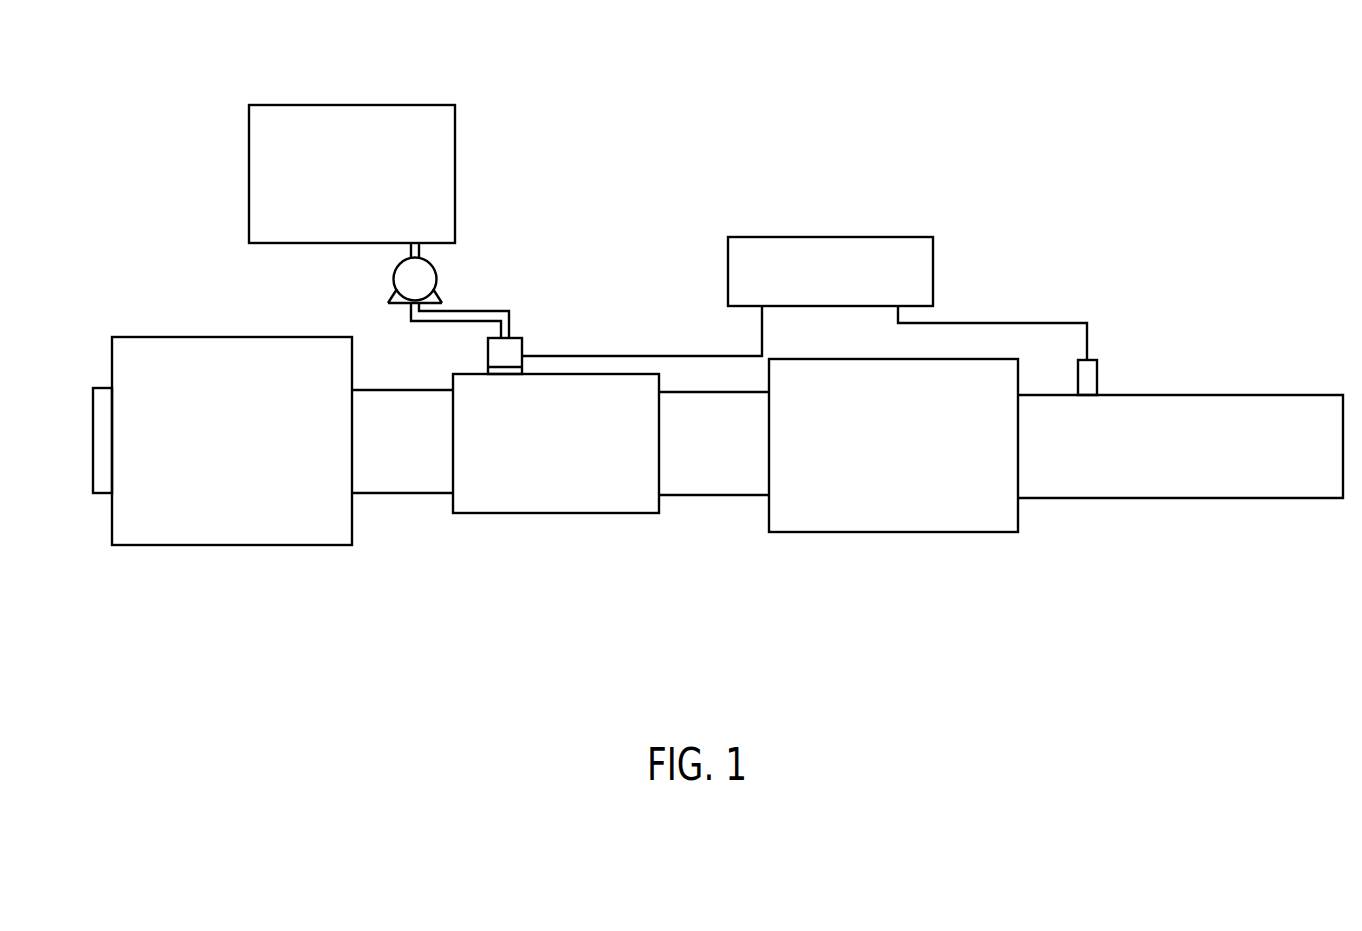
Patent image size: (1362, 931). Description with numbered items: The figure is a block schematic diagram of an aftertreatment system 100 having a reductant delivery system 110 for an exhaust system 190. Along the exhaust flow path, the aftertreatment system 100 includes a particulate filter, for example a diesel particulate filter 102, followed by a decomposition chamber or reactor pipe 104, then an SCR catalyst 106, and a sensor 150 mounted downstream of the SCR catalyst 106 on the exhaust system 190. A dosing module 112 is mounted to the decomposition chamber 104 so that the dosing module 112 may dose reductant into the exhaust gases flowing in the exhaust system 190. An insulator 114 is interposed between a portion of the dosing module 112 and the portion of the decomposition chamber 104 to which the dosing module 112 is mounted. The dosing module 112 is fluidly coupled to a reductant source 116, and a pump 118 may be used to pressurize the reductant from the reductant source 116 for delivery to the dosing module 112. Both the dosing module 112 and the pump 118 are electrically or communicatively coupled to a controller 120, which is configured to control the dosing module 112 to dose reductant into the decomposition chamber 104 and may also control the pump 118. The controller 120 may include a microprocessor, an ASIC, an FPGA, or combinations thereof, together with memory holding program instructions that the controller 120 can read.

The aftertreatment system 100 is at (980, 299).
The diesel particulate filter 102 is at (265, 545).
The decomposition chamber 104 is at (632, 374).
The SCR catalyst 106 is at (897, 532).
The reductant delivery system 110 is at (622, 280).
The dosing module 112 is at (523, 347).
The insulator 114 is at (488, 366).
The reductant source 116 is at (408, 104).
The pump 118 is at (394, 279).
The controller 120 is at (808, 237).
The sensor 150 is at (1121, 369).
The exhaust system 190 is at (446, 591).